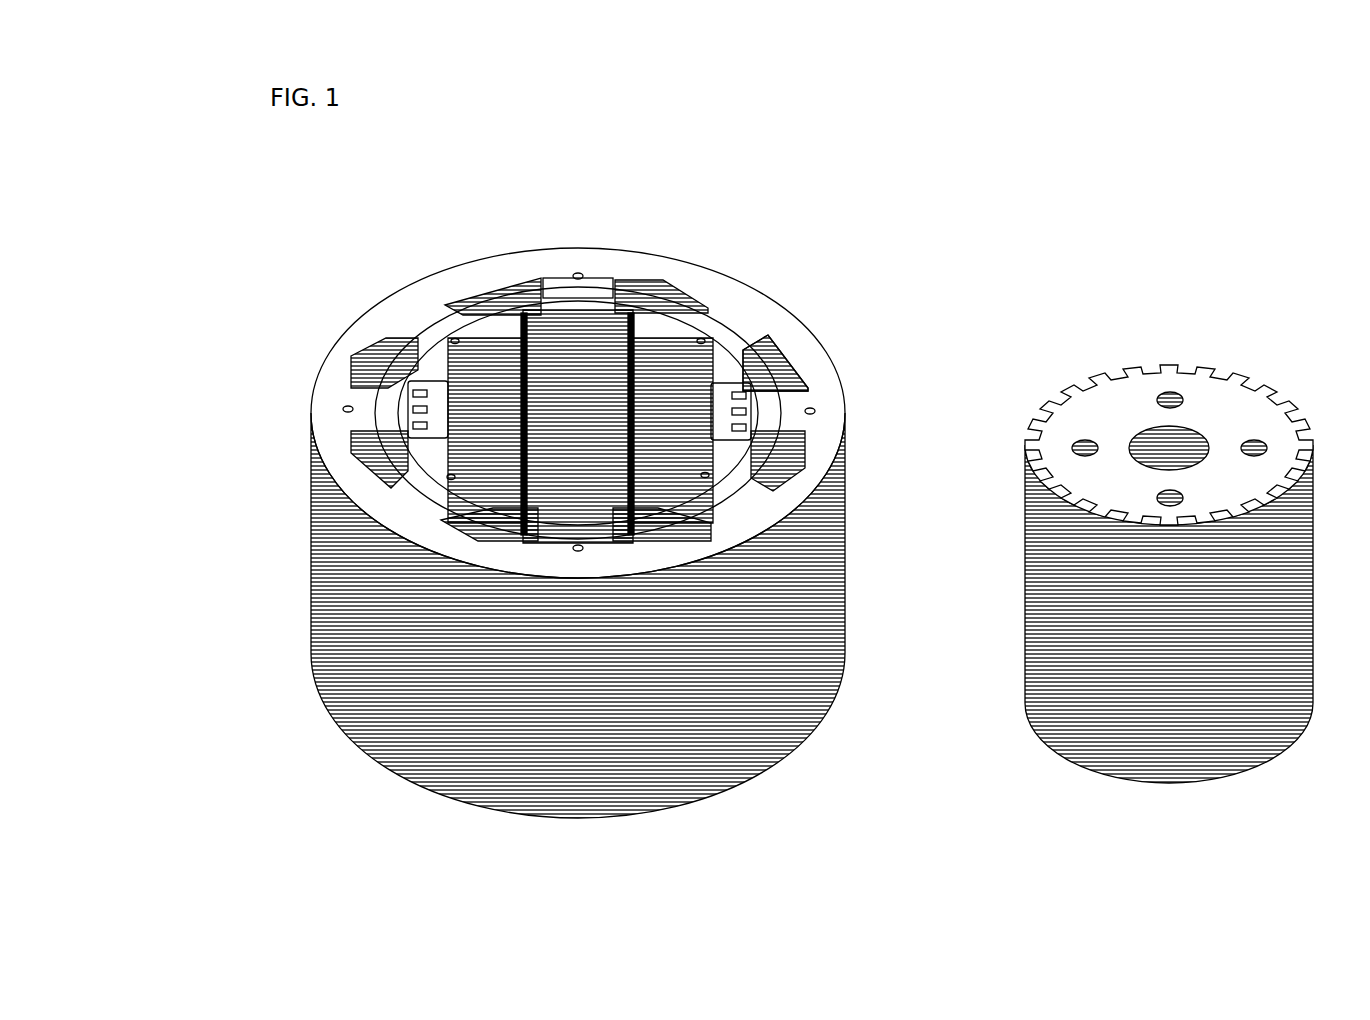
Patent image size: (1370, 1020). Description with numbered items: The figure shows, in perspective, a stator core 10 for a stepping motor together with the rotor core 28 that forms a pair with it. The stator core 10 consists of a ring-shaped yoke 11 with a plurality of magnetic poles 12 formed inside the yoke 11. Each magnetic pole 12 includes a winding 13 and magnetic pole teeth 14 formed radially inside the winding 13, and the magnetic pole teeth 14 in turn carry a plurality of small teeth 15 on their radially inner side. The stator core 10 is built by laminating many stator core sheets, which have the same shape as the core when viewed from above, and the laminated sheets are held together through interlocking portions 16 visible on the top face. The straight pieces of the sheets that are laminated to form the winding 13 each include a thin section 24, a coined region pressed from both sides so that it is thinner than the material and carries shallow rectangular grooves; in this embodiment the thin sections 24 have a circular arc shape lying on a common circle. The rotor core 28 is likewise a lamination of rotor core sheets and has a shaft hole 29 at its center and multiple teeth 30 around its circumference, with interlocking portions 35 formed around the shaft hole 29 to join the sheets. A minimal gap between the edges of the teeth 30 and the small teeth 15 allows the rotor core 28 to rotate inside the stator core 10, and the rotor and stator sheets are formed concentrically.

The stator core 10 is at (757, 262).
The yoke 11 is at (547, 262).
The magnetic pole 12 is at (713, 153).
The winding 13 is at (596, 278).
The magnetic pole teeth 14 is at (557, 290).
The small teeth 15 is at (452, 292).
The interlocking portions 16 is at (807, 403).
The thin section 24 is at (750, 333).
The rotor core 28 is at (1258, 372).
The shaft hole 29 is at (1180, 432).
The teeth 30 is at (1160, 352).
The interlocking portions 35 is at (1176, 489).